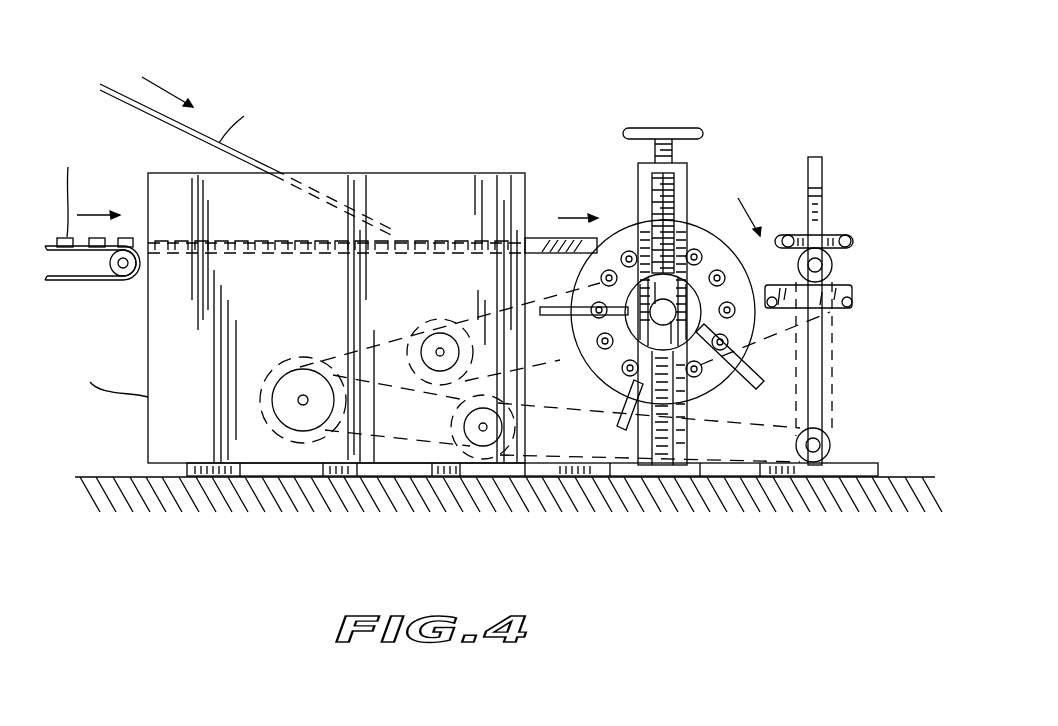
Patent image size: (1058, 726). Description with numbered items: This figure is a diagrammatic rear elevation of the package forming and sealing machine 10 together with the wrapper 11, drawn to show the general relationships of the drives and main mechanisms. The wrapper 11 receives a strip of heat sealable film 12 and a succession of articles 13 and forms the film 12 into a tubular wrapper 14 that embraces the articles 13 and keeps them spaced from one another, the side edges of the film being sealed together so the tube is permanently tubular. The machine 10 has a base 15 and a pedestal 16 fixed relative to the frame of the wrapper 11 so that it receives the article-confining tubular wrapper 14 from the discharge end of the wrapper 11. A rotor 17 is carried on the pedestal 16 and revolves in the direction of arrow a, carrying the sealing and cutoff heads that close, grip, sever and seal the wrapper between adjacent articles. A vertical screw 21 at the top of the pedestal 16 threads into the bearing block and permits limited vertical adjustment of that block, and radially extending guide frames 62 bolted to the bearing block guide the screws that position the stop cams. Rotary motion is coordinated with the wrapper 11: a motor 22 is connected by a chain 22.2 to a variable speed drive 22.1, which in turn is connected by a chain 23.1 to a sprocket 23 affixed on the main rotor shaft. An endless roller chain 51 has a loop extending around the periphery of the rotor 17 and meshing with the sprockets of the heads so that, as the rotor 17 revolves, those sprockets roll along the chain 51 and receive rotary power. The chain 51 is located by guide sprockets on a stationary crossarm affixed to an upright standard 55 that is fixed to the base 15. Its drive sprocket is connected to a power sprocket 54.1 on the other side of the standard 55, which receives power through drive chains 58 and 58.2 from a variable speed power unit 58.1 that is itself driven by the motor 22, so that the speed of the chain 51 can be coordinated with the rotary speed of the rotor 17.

The package forming and sealing machine 10 is at (601, 145).
The wrapper 11 is at (343, 166).
The heat sealable film 12 is at (126, 103).
The articles 13 is at (135, 237).
The tubular wrapper 14 is at (535, 238).
The base 15 is at (730, 480).
The pedestal 16 is at (637, 447).
The rotor 17 is at (622, 222).
The vertical screw 21 is at (672, 187).
The motor 22 is at (258, 402).
The variable speed drive 22.1 is at (443, 319).
The chain 22.2 is at (342, 358).
The sprocket 23 is at (705, 352).
The chain 23.1 is at (501, 300).
The endless roller chain 51 is at (852, 306).
The power sprocket 54.1 is at (832, 267).
The upright standard 55 is at (822, 191).
The drive chain 58 is at (833, 400).
The variable speed power unit 58.1 is at (462, 420).
The drive chain 58.2 is at (555, 455).
The guide frames 62 is at (565, 315).